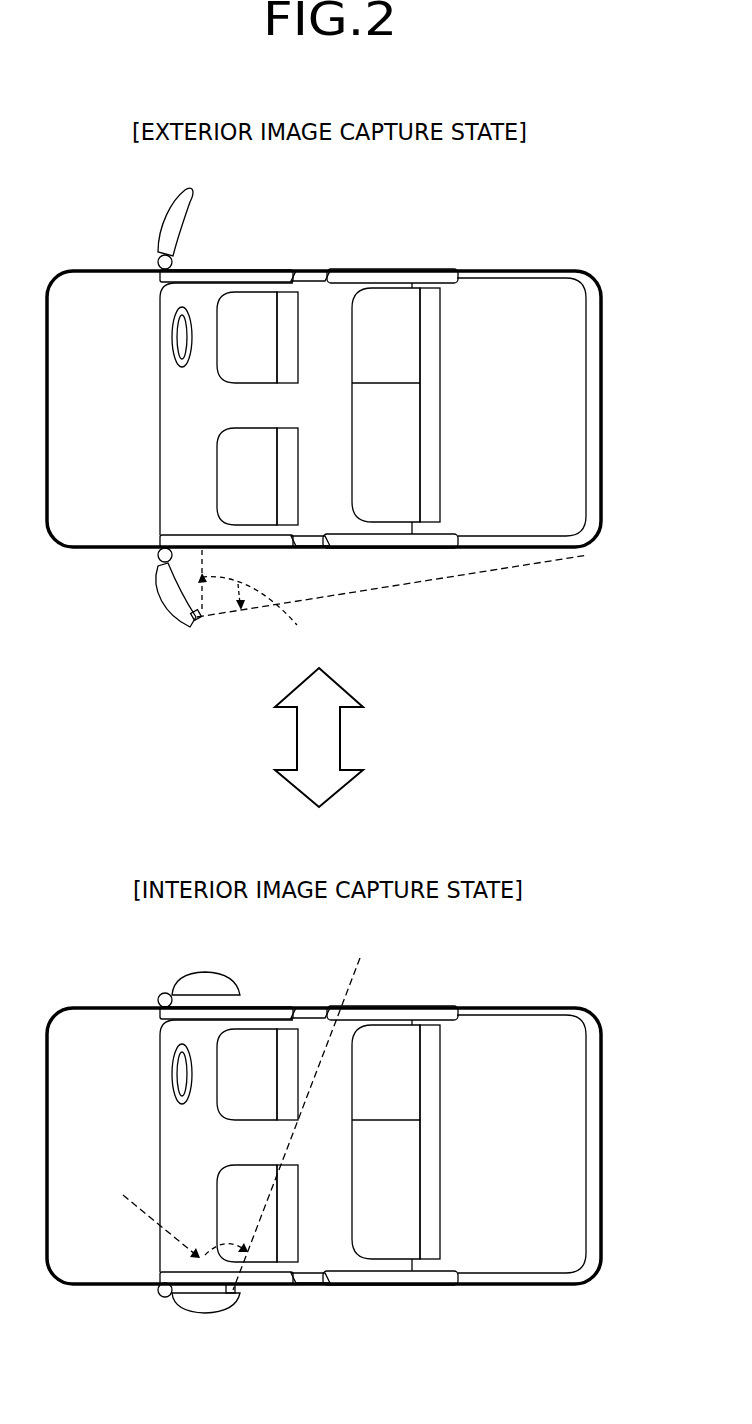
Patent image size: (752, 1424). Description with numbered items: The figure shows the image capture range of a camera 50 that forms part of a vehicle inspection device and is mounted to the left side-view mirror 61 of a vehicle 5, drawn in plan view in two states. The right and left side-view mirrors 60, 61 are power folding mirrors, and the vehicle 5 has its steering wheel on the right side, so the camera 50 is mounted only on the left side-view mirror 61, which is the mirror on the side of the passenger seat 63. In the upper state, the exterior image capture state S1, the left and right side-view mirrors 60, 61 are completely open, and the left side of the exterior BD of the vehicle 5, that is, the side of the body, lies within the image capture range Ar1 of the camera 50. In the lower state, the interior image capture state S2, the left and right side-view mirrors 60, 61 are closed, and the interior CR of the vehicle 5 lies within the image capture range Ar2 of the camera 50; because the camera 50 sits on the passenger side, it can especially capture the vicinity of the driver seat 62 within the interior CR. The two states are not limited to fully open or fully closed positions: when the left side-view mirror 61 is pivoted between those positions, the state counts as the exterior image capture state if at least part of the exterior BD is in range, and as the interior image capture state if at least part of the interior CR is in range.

The vehicle 5 is at (590, 278).
The camera 50 is at (198, 619).
The right side-view mirror 60 is at (158, 244).
The left side-view mirror 61 is at (158, 584).
The driver seat 62 is at (253, 302).
The passenger seat 63 is at (260, 507).
The exterior (side of the body) BD is at (337, 562).
The image capture range Ar1 is at (267, 608).
The image capture range Ar2 is at (214, 1240).
The interior CR is at (208, 400).
The exterior image capture state S1 is at (486, 228).
The interior image capture state S2 is at (485, 962).